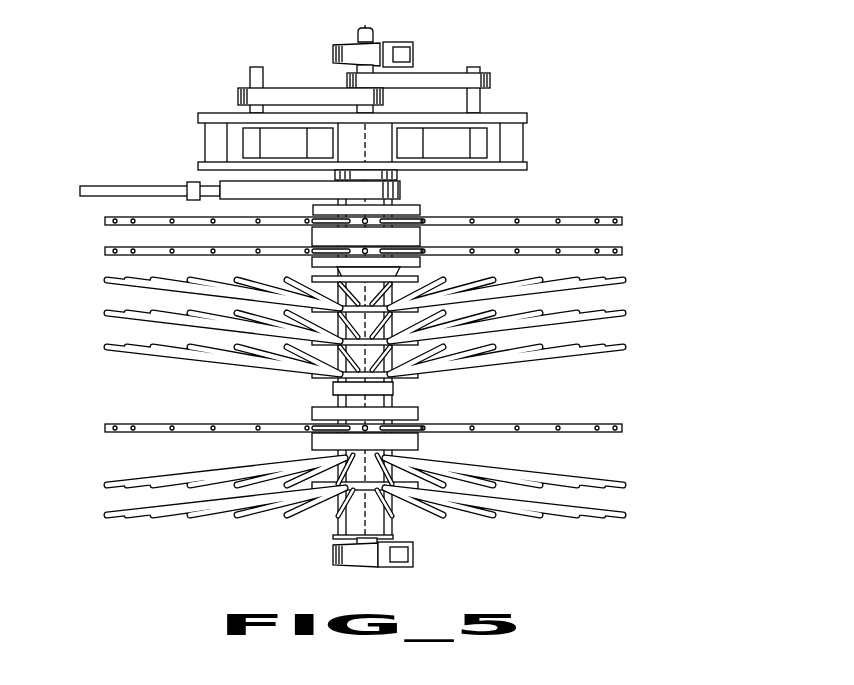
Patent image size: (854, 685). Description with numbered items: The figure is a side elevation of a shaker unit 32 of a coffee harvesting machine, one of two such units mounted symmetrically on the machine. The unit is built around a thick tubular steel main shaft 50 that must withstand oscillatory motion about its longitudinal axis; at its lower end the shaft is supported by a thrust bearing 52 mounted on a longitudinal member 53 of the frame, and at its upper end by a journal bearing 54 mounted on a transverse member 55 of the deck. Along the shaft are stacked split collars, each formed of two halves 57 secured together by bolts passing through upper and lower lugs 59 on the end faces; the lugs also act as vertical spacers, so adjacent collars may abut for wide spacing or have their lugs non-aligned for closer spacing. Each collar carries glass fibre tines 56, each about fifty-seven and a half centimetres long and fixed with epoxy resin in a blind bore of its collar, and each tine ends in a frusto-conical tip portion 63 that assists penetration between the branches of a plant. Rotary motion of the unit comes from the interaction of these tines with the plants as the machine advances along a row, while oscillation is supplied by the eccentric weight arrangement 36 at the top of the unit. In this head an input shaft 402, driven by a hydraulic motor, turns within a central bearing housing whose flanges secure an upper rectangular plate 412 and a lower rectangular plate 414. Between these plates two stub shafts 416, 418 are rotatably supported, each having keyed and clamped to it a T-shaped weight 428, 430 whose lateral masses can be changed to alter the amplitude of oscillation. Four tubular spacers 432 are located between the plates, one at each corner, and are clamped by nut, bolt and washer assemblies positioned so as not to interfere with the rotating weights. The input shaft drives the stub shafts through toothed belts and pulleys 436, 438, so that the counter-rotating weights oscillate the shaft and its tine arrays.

The shaker unit 32 is at (405, 350).
The eccentric weight arrangement 36 is at (359, 124).
The main shaft 50 is at (398, 177).
The thrust bearing 52 is at (333, 557).
The longitudinal member 53 is at (417, 552).
The journal bearing 54 is at (334, 47).
The transverse member 55 is at (413, 43).
The tine 56 is at (118, 248).
The collar half 57 is at (306, 425).
The lug 59 is at (418, 393).
The tip portion 63 is at (150, 280).
The input shaft 402 is at (373, 32).
The upper rectangular plate 412 is at (525, 117).
The lower rectangular plate 414 is at (525, 167).
The stub shaft 416 is at (483, 98).
The stub shaft 418 is at (250, 72).
The T-shaped weight 428 is at (435, 133).
The T-shaped weight 430 is at (240, 140).
The tubular spacer 432 is at (513, 138).
The toothed belt and pulley 436 is at (440, 75).
The toothed belt and pulley 438 is at (317, 88).